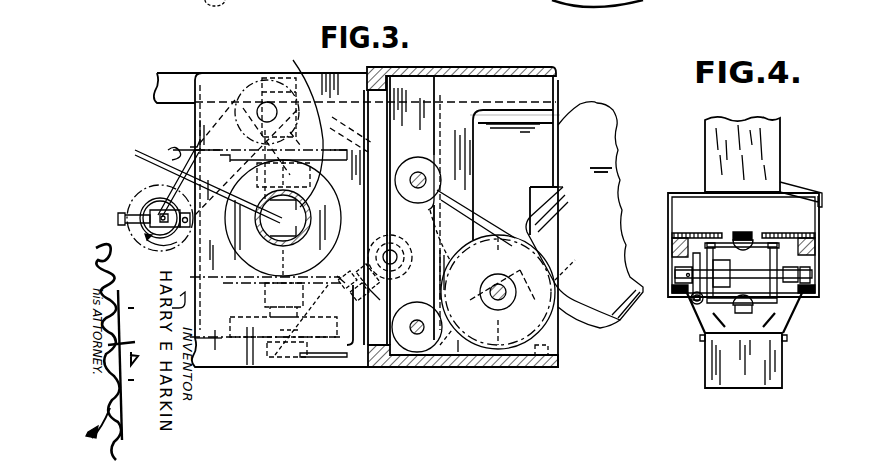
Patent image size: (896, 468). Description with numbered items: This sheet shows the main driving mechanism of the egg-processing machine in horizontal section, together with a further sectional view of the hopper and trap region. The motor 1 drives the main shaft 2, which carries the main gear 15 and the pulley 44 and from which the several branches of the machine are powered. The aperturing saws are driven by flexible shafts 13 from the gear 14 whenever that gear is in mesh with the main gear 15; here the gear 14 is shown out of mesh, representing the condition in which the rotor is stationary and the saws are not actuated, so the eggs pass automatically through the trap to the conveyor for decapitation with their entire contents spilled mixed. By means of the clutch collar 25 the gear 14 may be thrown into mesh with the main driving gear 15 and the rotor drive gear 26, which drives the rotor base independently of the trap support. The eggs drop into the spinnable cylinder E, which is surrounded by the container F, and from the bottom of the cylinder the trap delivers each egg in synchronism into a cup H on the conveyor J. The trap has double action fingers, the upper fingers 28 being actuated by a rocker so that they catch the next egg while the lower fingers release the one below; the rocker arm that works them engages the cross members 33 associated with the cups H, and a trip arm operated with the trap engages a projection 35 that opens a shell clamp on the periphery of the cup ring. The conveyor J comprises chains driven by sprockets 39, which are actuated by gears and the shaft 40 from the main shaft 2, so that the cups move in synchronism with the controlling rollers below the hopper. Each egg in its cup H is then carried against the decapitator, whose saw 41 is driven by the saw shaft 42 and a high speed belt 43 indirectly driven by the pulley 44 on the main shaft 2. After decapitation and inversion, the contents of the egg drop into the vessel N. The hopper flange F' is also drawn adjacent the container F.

In FIG. 3, the motor 1 is at (584, 215).
In FIG. 3, the main shaft 2 is at (495, 300).
In FIG. 3, the flexible shaft 13 is at (420, 178).
In FIG. 3, the gear 14 is at (460, 350).
In FIG. 3, the main gear 15 is at (540, 352).
In FIG. 3, the clutch collar 25 is at (288, 350).
In FIG. 3, the rotor drive gear 26 is at (185, 140).
In FIG. 3, the upper fingers 28 is at (150, 160).
In FIG. 4, the cross member 33 is at (780, 278).
In FIG. 4, the projection 35 is at (722, 235).
In FIG. 3, the sprocket 39 is at (275, 355).
In FIG. 4, the sprocket 39 is at (697, 303).
In FIG. 3, the shaft 40 is at (440, 370).
In FIG. 3, the saw 41 is at (147, 203).
In FIG. 3, the saw shaft 42 is at (147, 217).
In FIG. 3, the high speed belt 43 is at (150, 208).
In FIG. 3, the pulley 44 is at (503, 232).
In FIG. 3, the cylinder E is at (293, 60).
In FIG. 4, the container F is at (764, 154).
In FIG. 4, the hopper flange F' is at (823, 188).
In FIG. 4, the cup H is at (753, 237).
In FIG. 3, the conveyor J is at (173, 152).
In FIG. 4, the vessel N is at (783, 360).